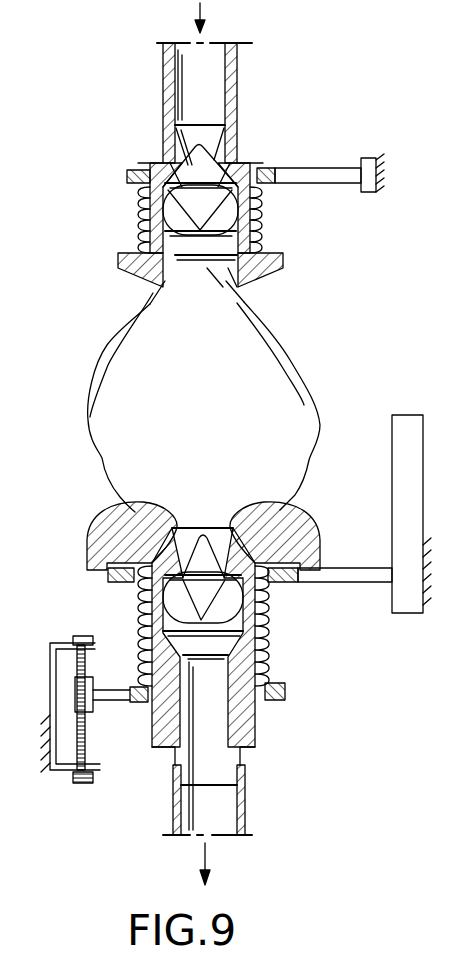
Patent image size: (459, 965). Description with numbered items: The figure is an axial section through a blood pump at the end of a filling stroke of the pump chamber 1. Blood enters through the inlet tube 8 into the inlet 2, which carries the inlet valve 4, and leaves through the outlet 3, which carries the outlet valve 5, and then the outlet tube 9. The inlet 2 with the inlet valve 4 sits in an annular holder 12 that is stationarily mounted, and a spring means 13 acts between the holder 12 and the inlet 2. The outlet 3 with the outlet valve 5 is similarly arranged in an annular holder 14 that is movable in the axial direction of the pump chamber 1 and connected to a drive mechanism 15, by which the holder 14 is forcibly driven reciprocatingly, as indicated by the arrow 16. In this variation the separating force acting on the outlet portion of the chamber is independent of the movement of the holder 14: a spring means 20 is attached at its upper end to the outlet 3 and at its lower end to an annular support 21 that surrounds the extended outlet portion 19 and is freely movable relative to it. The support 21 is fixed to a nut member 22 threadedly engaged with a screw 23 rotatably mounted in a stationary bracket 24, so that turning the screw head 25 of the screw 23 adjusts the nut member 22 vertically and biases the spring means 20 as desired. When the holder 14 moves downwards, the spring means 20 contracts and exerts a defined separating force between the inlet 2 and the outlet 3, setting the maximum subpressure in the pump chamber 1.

The pump chamber 1 is at (300, 357).
The inlet 2 is at (243, 290).
The outlet 3 is at (199, 522).
The inlet valve 4 is at (230, 160).
The outlet valve 5 is at (221, 603).
The inlet tube 8 is at (237, 88).
The outlet tube 9 is at (245, 795).
The annular holder 12 is at (275, 168).
The spring means 13 is at (266, 227).
The annular holder 14 is at (292, 583).
The drive mechanism 15 is at (405, 447).
The arrow 16 is at (354, 551).
The extended outlet portion 19 is at (262, 725).
The spring means 20 is at (134, 618).
The annular support 21 is at (285, 692).
The nut member 22 is at (93, 685).
The screw 23 is at (85, 740).
The stationary bracket 24 is at (55, 648).
The screw head 25 is at (90, 784).